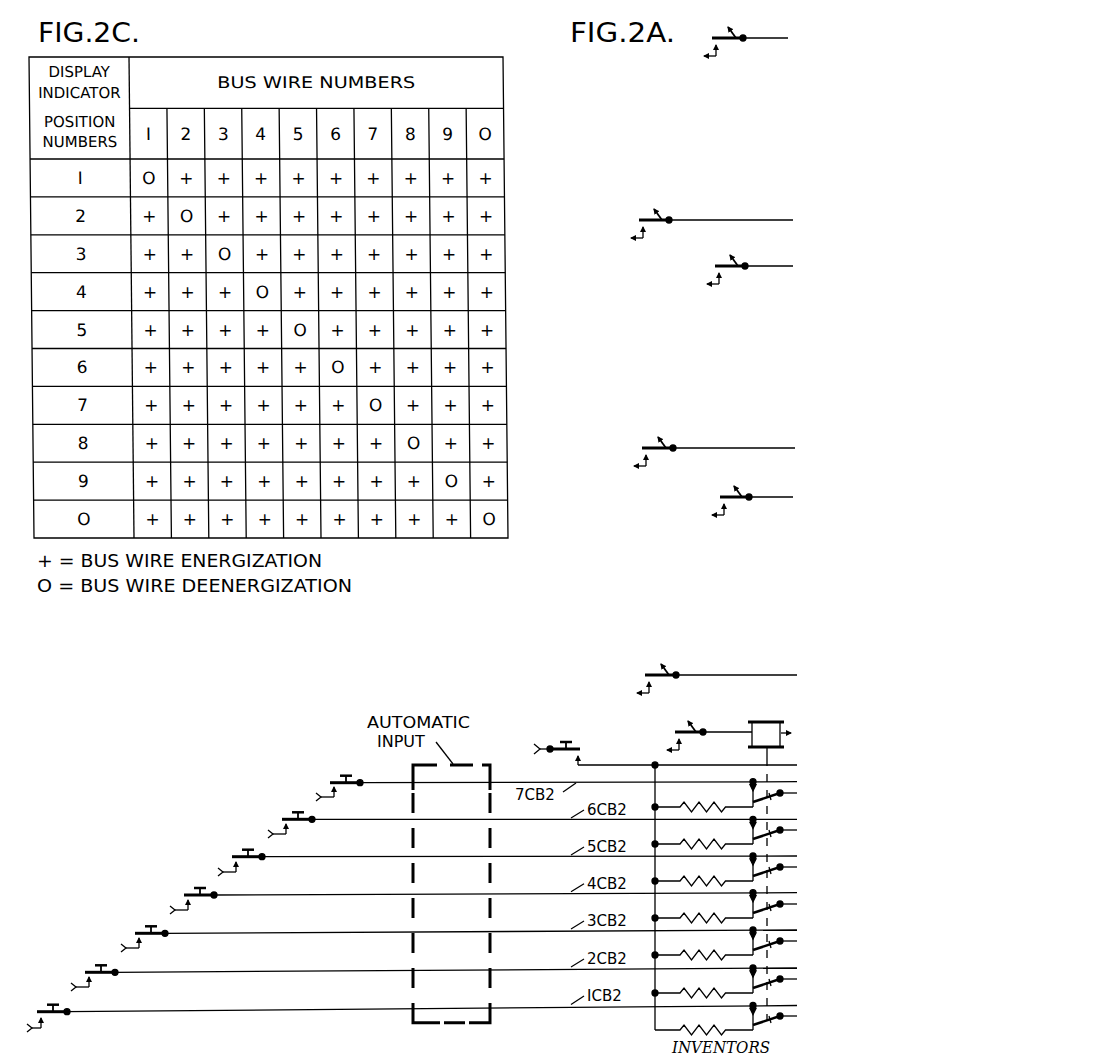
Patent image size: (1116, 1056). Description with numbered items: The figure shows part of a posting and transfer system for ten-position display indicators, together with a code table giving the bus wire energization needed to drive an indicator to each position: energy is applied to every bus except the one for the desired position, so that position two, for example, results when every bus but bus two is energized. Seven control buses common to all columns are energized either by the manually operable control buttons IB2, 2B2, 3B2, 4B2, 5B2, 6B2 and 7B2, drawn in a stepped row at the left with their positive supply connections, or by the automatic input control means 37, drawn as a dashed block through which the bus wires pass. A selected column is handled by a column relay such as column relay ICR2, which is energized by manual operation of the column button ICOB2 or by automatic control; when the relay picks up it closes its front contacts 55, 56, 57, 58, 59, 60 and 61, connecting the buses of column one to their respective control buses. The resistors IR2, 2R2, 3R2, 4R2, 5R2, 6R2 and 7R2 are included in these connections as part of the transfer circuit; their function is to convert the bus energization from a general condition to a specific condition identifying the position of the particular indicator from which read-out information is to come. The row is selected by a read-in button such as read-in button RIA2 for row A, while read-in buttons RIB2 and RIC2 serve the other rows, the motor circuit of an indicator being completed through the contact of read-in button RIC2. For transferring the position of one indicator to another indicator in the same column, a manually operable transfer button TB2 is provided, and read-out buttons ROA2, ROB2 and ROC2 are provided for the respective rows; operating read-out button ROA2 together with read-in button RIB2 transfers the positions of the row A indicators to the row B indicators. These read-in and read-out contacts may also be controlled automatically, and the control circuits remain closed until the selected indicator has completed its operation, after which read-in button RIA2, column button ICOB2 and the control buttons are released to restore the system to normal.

The automatic input control means 37 is at (424, 1024).
The front contact 55 is at (773, 1022).
The front contact 56 is at (773, 984).
The front contact 57 is at (773, 946).
The front contact 58 is at (773, 909).
The front contact 59 is at (773, 872).
The front contact 60 is at (773, 835).
The front contact 61 is at (773, 798).
The relay contact ROC2 is at (735, 36).
The read-in button RIC2 is at (701, 217).
The relay contact ROB2 is at (739, 263).
The read-in button RIB2 is at (704, 443).
The read-out button ROA2 is at (742, 494).
The read-in button RIA2 is at (706, 670).
The column button ICOB2 is at (699, 729).
The column relay ICR2 is at (767, 712).
The transfer button TB2 is at (545, 738).
The manually operable button IB2 is at (49, 1003).
The manually operable button 2B2 is at (96, 964).
The manually operable button 3B2 is at (146, 925).
The manually operable button 4B2 is at (195, 887).
The manually operable button 5B2 is at (243, 849).
The manually operable button 6B2 is at (293, 811).
The manually operable button 7B2 is at (344, 774).
The resistor IR2 is at (704, 1023).
The resistor 2R2 is at (702, 986).
The resistor 3R2 is at (702, 948).
The resistor 4R2 is at (702, 911).
The resistor 5R2 is at (702, 874).
The resistor 6R2 is at (702, 837).
The resistor 7R2 is at (702, 800).